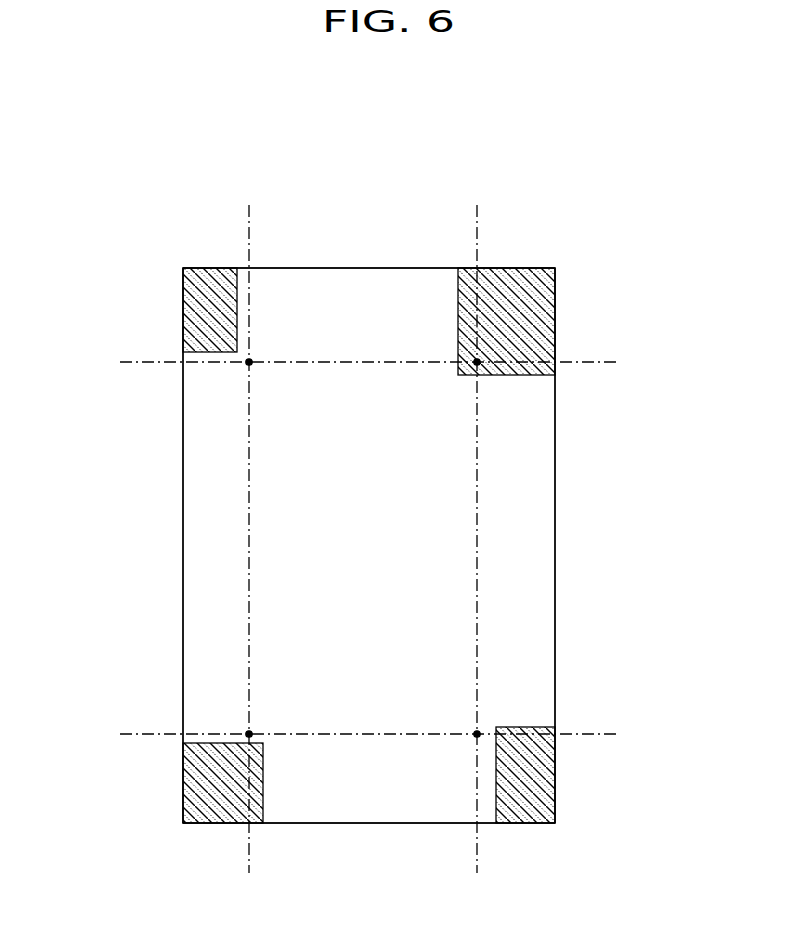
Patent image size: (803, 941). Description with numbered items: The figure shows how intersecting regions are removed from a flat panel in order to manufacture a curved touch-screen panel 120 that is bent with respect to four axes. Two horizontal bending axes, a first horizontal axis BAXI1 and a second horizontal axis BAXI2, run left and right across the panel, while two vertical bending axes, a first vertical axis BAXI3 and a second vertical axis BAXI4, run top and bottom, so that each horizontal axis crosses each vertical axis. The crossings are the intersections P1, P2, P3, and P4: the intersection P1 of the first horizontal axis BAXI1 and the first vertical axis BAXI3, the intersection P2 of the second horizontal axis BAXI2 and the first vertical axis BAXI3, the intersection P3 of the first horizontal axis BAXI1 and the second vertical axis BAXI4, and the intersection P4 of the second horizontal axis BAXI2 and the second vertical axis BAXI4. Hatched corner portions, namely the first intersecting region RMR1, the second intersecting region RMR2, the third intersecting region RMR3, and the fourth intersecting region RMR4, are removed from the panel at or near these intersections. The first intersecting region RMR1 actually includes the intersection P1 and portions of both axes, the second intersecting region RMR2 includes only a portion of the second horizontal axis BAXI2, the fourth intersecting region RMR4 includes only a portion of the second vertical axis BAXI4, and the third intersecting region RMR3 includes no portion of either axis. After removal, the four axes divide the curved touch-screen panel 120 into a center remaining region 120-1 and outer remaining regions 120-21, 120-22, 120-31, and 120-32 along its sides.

The curved touch-screen panel 120 is at (570, 187).
The center remaining region 120-1 is at (440, 487).
The outer remaining region 120-21 is at (205, 538).
The outer remaining region 120-22 is at (530, 553).
The outer remaining region 120-31 is at (360, 297).
The outer remaining region 120-32 is at (360, 795).
The first intersecting region RMR1 is at (540, 313).
The second intersecting region RMR2 is at (540, 787).
The third intersecting region RMR3 is at (200, 313).
The fourth intersecting region RMR4 is at (200, 787).
The first horizontal axis BAXI1 is at (403, 366).
The second horizontal axis BAXI2 is at (404, 738).
The first vertical axis BAXI3 is at (477, 560).
The second vertical axis BAXI4 is at (249, 560).
The intersection P1 is at (474, 365).
The intersection P2 is at (474, 731).
The intersection P3 is at (252, 365).
The intersection P4 is at (252, 731).